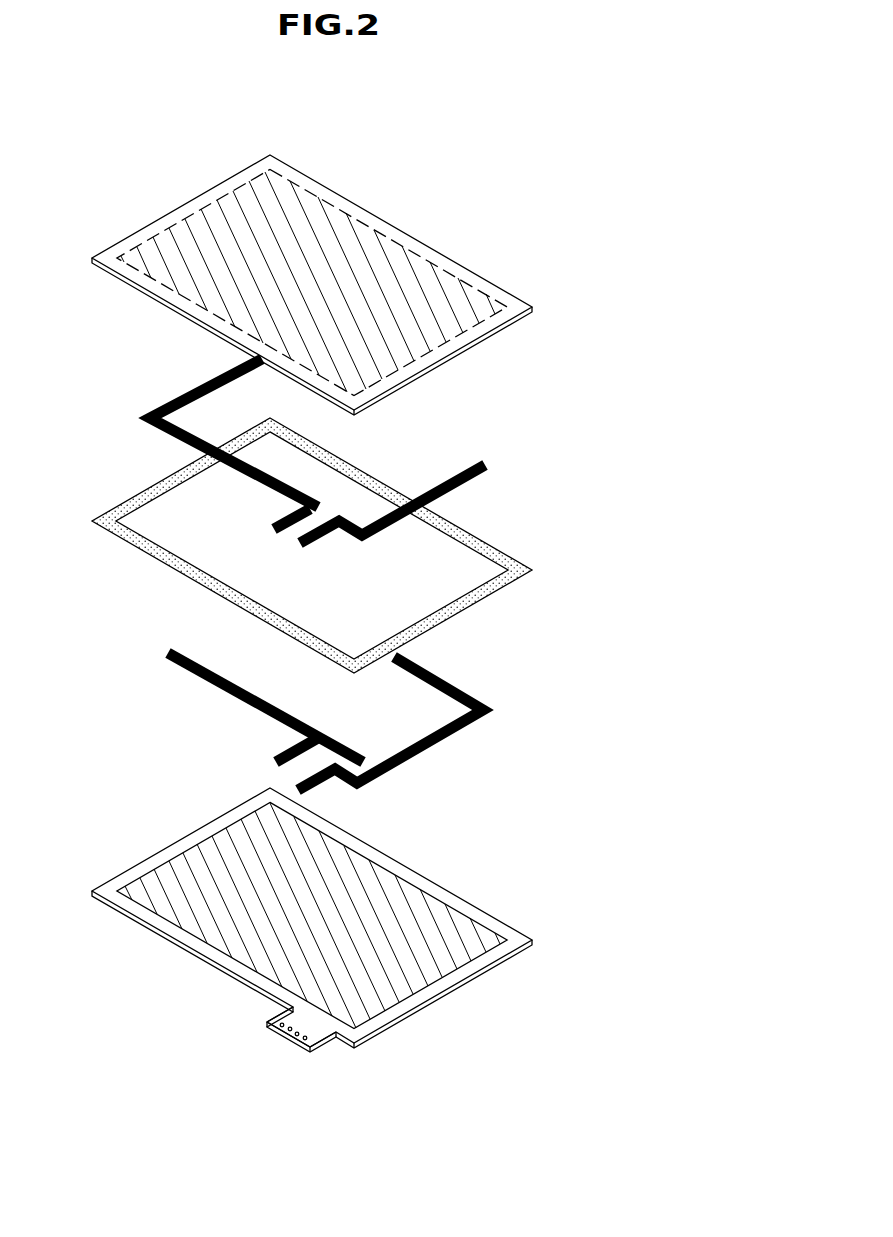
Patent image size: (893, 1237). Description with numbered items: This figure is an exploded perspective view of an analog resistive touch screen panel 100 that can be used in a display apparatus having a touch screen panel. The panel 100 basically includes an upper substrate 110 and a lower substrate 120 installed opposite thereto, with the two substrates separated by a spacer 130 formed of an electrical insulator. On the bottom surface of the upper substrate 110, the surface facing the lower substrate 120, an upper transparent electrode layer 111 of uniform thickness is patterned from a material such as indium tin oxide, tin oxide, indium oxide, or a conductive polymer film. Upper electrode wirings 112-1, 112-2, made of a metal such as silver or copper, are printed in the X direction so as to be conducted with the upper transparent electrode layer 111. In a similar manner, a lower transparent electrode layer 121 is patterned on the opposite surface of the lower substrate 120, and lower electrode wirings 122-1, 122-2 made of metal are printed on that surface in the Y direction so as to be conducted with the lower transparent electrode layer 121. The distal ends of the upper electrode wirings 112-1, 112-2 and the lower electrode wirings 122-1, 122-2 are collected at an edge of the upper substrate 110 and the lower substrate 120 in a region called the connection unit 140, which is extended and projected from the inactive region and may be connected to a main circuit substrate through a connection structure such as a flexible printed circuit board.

The analog resistive touch screen panel 100 is at (76, 142).
The upper substrate 110 is at (511, 303).
The upper transparent electrode layer 111 is at (427, 268).
The upper electrode wiring 112-1 is at (486, 466).
The upper electrode wiring 112-2 is at (150, 418).
The lower substrate 120 is at (518, 940).
The lower transparent electrode layer 121 is at (446, 912).
The lower electrode wiring 122-1 is at (484, 708).
The lower electrode wiring 122-2 is at (166, 653).
The spacer 130 is at (525, 566).
The connection unit 140 is at (289, 1015).